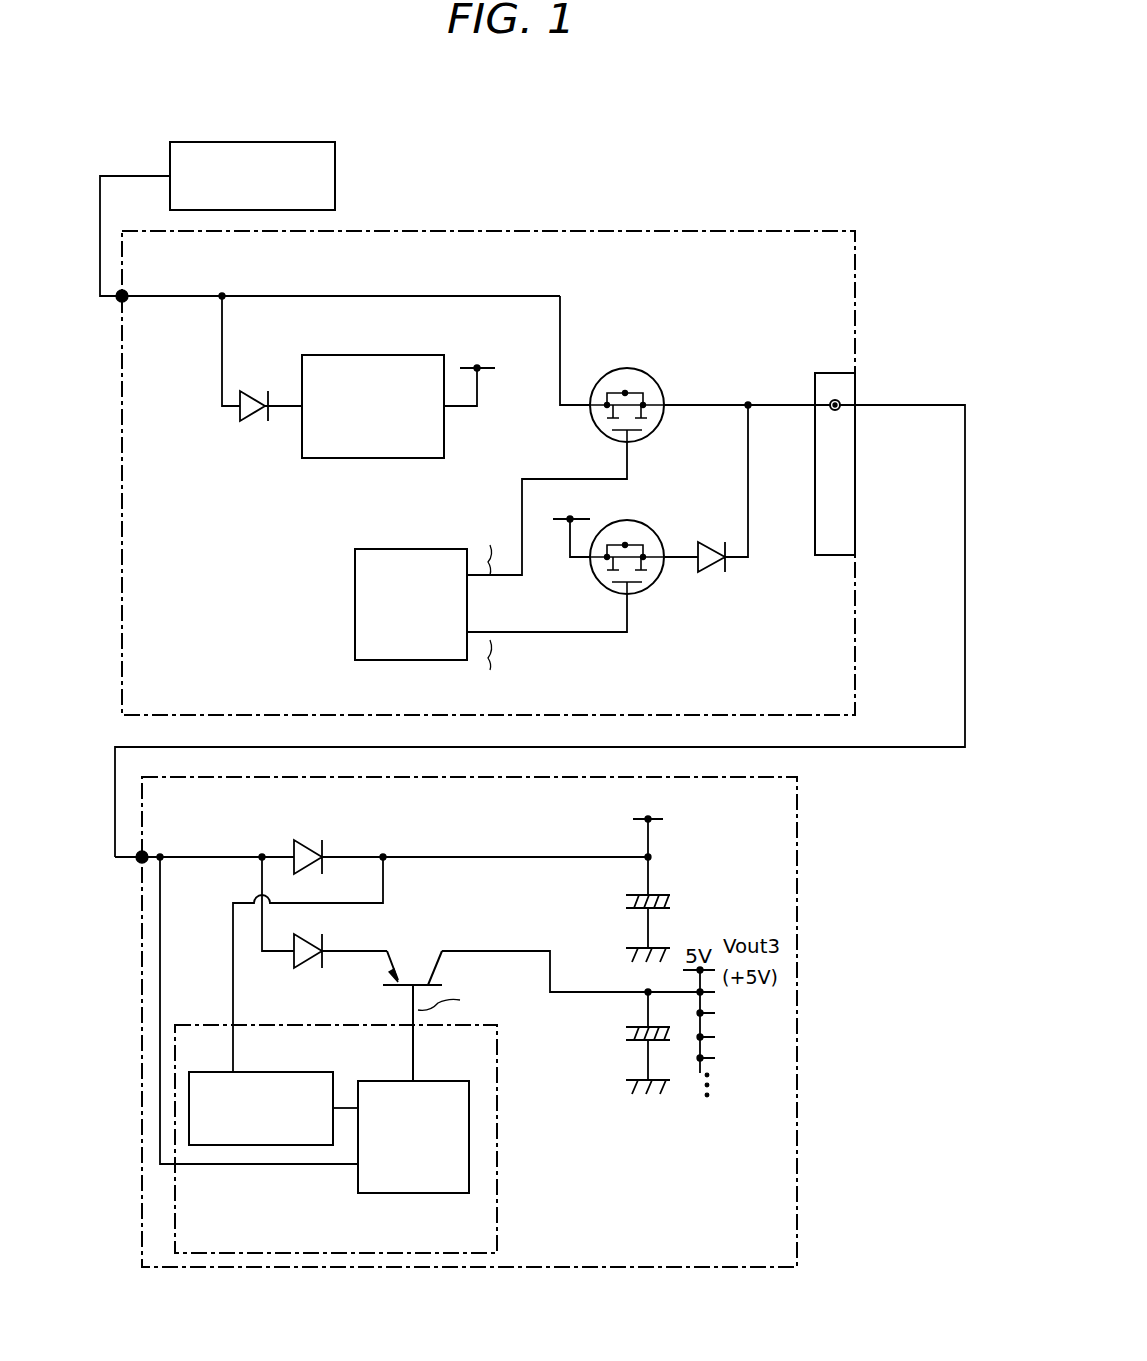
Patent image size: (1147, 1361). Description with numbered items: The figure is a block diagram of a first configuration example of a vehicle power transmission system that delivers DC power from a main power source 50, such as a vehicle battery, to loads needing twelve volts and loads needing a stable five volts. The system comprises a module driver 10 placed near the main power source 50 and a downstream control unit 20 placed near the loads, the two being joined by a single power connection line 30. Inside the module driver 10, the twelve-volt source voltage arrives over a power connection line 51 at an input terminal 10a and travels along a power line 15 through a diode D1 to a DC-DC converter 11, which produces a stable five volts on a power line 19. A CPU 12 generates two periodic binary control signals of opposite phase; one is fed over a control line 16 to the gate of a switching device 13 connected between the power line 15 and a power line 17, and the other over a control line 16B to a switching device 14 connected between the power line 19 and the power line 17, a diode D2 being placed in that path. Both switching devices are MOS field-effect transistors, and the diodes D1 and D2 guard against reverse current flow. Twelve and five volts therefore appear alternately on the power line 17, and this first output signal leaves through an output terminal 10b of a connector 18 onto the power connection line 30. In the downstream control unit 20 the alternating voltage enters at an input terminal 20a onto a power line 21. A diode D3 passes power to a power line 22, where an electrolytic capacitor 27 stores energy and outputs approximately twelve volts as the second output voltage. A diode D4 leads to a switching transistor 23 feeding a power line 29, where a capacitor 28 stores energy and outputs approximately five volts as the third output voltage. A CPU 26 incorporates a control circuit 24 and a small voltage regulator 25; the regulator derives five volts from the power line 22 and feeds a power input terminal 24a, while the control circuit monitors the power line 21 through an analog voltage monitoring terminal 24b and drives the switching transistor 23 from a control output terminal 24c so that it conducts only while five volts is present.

The module driver 10 is at (593, 231).
The input terminal 10a is at (120, 300).
The output terminal 10b is at (840, 400).
The DC-DC converter 11 is at (302, 358).
The CPU 12 is at (411, 549).
The switching device 13 is at (654, 376).
The switching device 14 is at (651, 530).
The power line 15 is at (415, 296).
The control line 16 is at (562, 478).
The control line 16B is at (590, 634).
The power line 17 is at (712, 405).
The connector 18 is at (835, 373).
The power line 19 is at (485, 375).
The downstream control unit 20 is at (565, 1270).
The input terminal 20a is at (140, 862).
The power line 21 is at (214, 857).
The power line 22 is at (524, 857).
The switching transistor 23 is at (435, 972).
The control circuit 24 is at (414, 1194).
The power input terminal 24a is at (348, 1105).
The analog voltage monitoring terminal 24b is at (357, 1170).
The control output terminal 24c is at (420, 1081).
The voltage regulator 25 is at (260, 1147).
The CPU 26 is at (212, 1025).
The capacitor 27 is at (638, 912).
The capacitor 28 is at (638, 1045).
The power line 29 is at (503, 950).
The power connection line 30 is at (965, 578).
The main power source 50 is at (252, 142).
The power connection line 51 is at (150, 176).
The diode D1 is at (255, 420).
The diode D2 is at (716, 575).
The diode D3 is at (306, 840).
The diode D4 is at (310, 975).